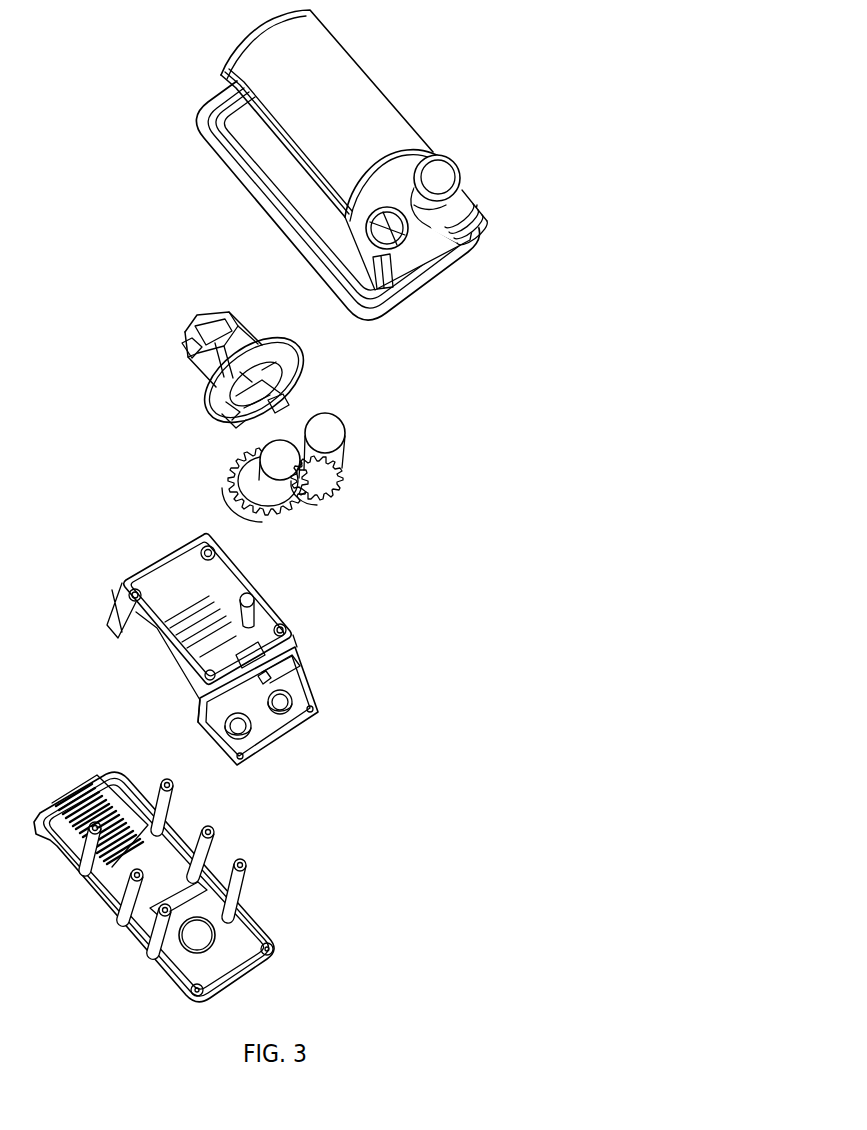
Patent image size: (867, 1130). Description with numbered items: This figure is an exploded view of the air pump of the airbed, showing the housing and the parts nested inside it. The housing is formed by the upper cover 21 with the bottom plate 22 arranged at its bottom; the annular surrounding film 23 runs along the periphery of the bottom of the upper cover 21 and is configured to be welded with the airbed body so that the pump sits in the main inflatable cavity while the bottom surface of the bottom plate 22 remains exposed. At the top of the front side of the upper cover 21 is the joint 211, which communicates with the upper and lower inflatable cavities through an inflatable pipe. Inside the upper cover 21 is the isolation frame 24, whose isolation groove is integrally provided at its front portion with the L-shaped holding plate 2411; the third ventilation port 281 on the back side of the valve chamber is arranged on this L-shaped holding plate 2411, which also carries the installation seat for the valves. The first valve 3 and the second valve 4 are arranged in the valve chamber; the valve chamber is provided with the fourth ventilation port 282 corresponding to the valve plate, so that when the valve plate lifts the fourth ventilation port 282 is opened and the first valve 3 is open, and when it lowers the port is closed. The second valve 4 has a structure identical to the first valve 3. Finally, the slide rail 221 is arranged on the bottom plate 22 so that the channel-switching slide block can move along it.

The upper cover 21 is at (352, 103).
The joint 211 is at (439, 178).
The annular surrounding film 23 is at (205, 140).
The fourth ventilation port 282 is at (400, 237).
The first valve 3 is at (297, 500).
The second valve 4 is at (317, 457).
The isolation frame 24 is at (185, 588).
The third ventilation port 281 is at (266, 680).
The L-shaped holding plate 2411 is at (260, 720).
The bottom plate 22 is at (110, 890).
The slide rail 221 is at (207, 880).